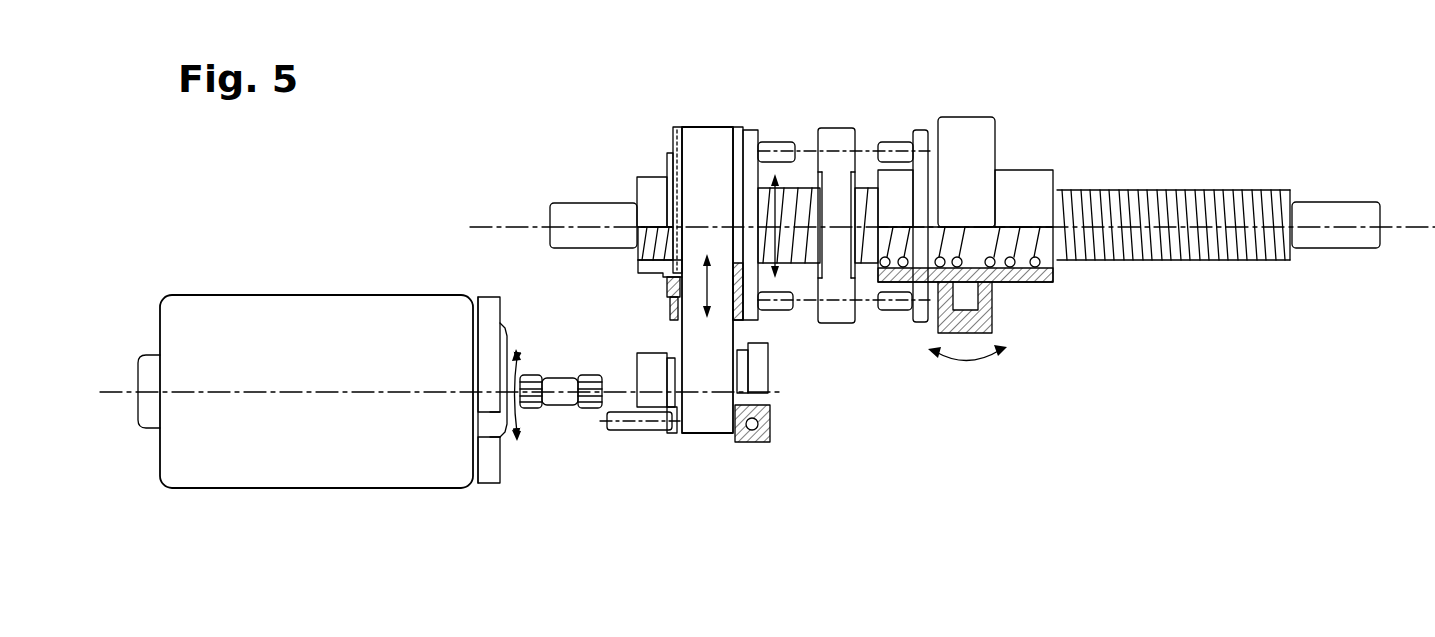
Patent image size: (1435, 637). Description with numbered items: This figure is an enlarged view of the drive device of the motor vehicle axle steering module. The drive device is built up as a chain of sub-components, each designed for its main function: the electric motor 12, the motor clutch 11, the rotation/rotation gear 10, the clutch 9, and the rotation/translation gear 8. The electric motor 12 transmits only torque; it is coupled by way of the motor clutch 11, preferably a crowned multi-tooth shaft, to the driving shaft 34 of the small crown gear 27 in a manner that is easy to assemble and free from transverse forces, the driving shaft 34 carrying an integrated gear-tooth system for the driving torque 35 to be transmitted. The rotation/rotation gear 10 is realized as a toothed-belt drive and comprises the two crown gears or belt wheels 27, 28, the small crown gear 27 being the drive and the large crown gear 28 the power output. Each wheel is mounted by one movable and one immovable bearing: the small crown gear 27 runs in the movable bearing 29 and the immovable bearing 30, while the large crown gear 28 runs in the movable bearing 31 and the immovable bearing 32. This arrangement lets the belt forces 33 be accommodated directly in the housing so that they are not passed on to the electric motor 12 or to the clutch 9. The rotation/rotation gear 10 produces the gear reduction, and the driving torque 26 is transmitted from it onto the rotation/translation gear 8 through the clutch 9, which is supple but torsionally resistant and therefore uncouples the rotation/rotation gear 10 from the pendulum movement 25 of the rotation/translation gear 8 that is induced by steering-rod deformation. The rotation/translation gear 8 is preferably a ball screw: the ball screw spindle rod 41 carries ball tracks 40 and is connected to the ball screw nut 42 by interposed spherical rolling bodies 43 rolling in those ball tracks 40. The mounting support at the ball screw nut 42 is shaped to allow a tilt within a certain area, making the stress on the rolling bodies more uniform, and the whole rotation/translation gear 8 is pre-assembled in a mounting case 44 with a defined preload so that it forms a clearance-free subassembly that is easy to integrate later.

The rotation/translation gear 8 is at (965, 150).
The clutch 9 is at (837, 135).
The rotation/rotation gear 10 is at (707, 147).
The motor clutch 11 is at (560, 398).
The electric motor 12 is at (188, 333).
The pendulum movement 25 is at (970, 362).
The driving torque 26 is at (795, 222).
The small crown gear 27 is at (672, 412).
The large crown gear 28 is at (678, 127).
The movable bearing 29 is at (650, 367).
The immovable bearing 30 is at (763, 443).
The movable bearing 31 is at (667, 283).
The immovable bearing 32 is at (738, 280).
The belt forces 33 is at (723, 287).
The driving shaft 34 is at (742, 402).
The driving torque 35 is at (520, 372).
The ball tracks 40 is at (1122, 190).
The ball screw spindle rod 41 is at (1168, 190).
The ball screw nut 42 is at (1017, 282).
The spherical rolling bodies 43 is at (1057, 262).
The mounting case 44 is at (948, 335).